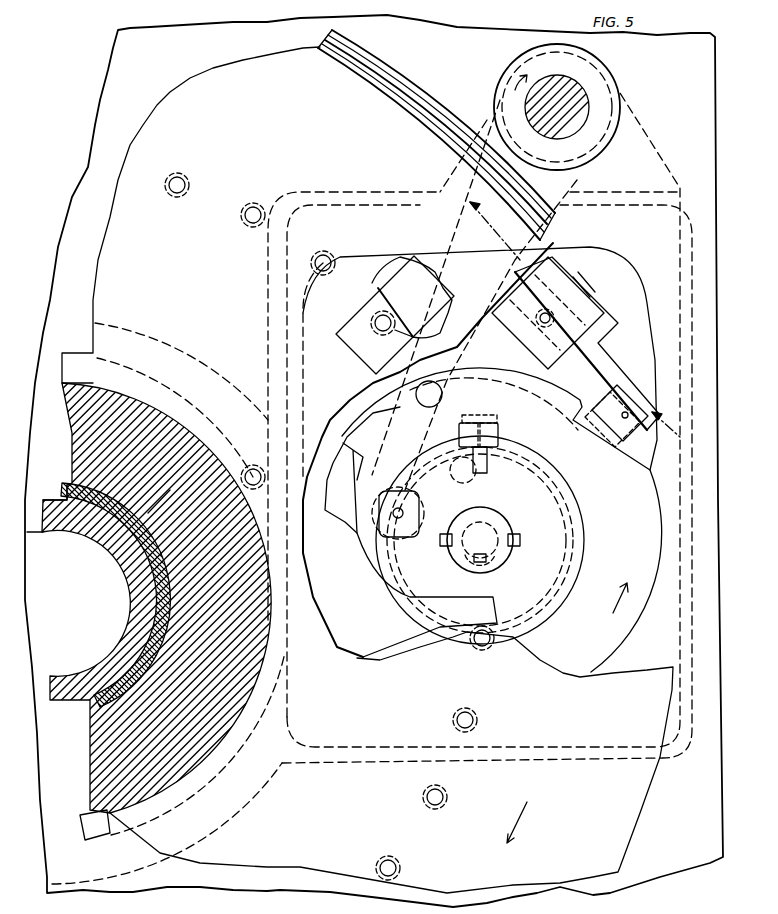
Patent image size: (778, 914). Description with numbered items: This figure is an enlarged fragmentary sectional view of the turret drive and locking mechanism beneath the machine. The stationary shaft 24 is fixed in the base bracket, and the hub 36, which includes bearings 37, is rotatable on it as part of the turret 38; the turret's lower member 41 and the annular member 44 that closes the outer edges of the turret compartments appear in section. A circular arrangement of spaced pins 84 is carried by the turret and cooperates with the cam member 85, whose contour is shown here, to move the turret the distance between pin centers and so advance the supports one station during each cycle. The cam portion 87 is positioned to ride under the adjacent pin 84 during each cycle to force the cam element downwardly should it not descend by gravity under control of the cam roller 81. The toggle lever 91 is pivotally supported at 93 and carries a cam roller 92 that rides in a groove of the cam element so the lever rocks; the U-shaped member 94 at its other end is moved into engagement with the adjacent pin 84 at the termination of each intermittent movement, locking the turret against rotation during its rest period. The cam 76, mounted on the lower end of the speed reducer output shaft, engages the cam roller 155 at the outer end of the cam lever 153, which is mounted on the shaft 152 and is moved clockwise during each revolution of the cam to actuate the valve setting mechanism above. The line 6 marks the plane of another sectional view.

The section line 6— 6 is at (486, 188).
The stationary shaft 24 is at (130, 615).
The hub 36 is at (123, 538).
The bearings 37 is at (157, 567).
The turret 38 is at (412, 90).
The lower member 41 is at (422, 130).
The annular member 44 is at (373, 75).
The cam 76 is at (520, 407).
The cam roller 81 is at (498, 428).
The pins 84 is at (247, 208).
The cam member 85 is at (410, 610).
The cam portion 87 is at (583, 532).
The toggle lever 91 is at (598, 370).
The cam roller 92 is at (613, 448).
The pivot 93 is at (573, 297).
The U-shaped member 94 is at (382, 300).
The shaft 152 is at (580, 100).
The cam lever 153 is at (453, 233).
The cam roller 155 is at (392, 534).